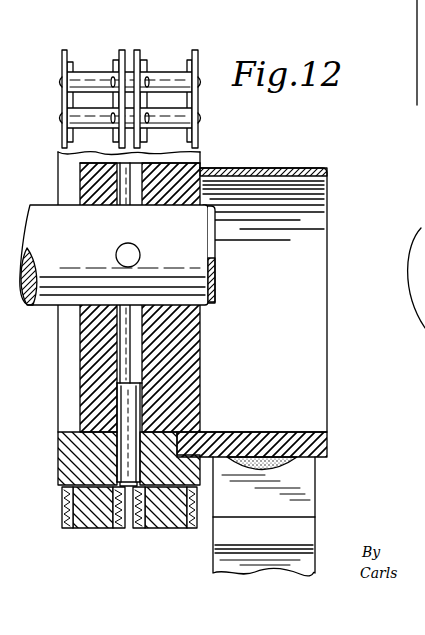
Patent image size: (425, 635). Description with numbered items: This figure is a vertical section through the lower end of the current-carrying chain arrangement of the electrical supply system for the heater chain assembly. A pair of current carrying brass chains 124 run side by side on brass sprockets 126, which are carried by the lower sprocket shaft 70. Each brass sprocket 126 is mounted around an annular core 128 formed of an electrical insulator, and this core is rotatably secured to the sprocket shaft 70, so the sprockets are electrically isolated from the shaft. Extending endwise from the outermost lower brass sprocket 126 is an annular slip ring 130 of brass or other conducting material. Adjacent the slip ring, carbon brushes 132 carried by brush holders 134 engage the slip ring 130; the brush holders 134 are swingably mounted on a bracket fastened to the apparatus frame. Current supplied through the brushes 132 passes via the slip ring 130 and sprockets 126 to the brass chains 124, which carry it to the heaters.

The lower sprocket shaft 70 is at (198, 220).
The current carrying brass chains 124 is at (195, 66).
The brass sprockets 126 is at (203, 484).
The annular core 128 is at (192, 362).
The annular slip ring 130 is at (327, 448).
The carbon brushes 132 is at (290, 463).
The brush holders 134 is at (312, 508).